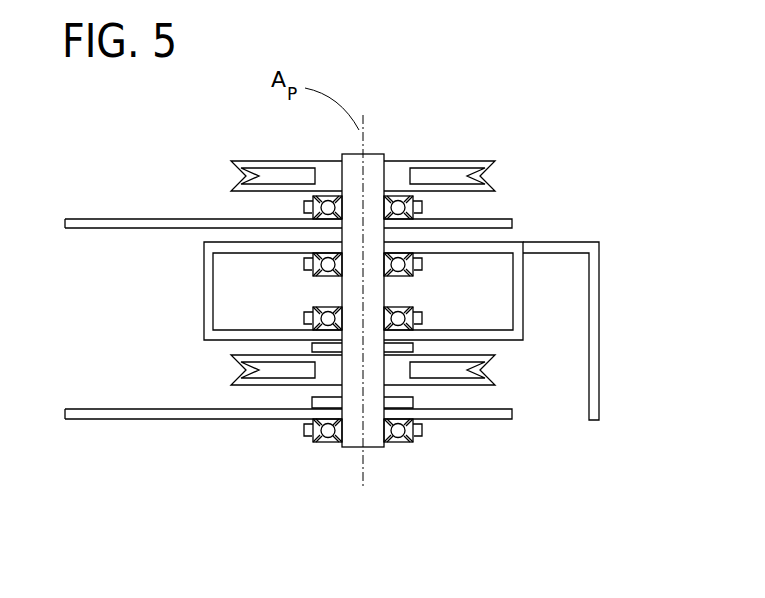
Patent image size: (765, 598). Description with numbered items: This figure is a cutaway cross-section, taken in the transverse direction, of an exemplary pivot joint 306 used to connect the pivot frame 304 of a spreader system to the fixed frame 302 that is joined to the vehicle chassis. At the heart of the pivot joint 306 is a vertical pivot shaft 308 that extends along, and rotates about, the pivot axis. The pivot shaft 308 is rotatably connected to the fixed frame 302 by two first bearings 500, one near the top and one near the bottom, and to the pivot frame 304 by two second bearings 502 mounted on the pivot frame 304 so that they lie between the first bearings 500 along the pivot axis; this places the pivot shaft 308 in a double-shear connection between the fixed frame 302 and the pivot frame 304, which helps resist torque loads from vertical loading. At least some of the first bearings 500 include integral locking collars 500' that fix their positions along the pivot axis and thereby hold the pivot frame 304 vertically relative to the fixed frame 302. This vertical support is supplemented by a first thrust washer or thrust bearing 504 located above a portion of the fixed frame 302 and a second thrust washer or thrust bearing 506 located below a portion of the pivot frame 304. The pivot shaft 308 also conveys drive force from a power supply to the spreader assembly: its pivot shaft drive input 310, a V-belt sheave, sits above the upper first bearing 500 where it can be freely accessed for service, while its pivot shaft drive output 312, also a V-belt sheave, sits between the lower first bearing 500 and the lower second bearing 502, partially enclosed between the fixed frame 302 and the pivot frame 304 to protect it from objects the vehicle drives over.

The fixed frame 302 is at (83, 220).
The pivot frame 304 is at (593, 298).
The pivot joint 306 is at (234, 470).
The pivot shaft 308 is at (372, 447).
The pivot shaft drive input 310 is at (492, 178).
The pivot shaft drive output 312 is at (480, 385).
The first bearing 500 is at (243, 350).
The integral locking collar 500' is at (479, 279).
The second bearing 502 is at (300, 318).
The first thrust washer or thrust bearing 504 is at (420, 403).
The second thrust washer or thrust bearing 506 is at (415, 347).